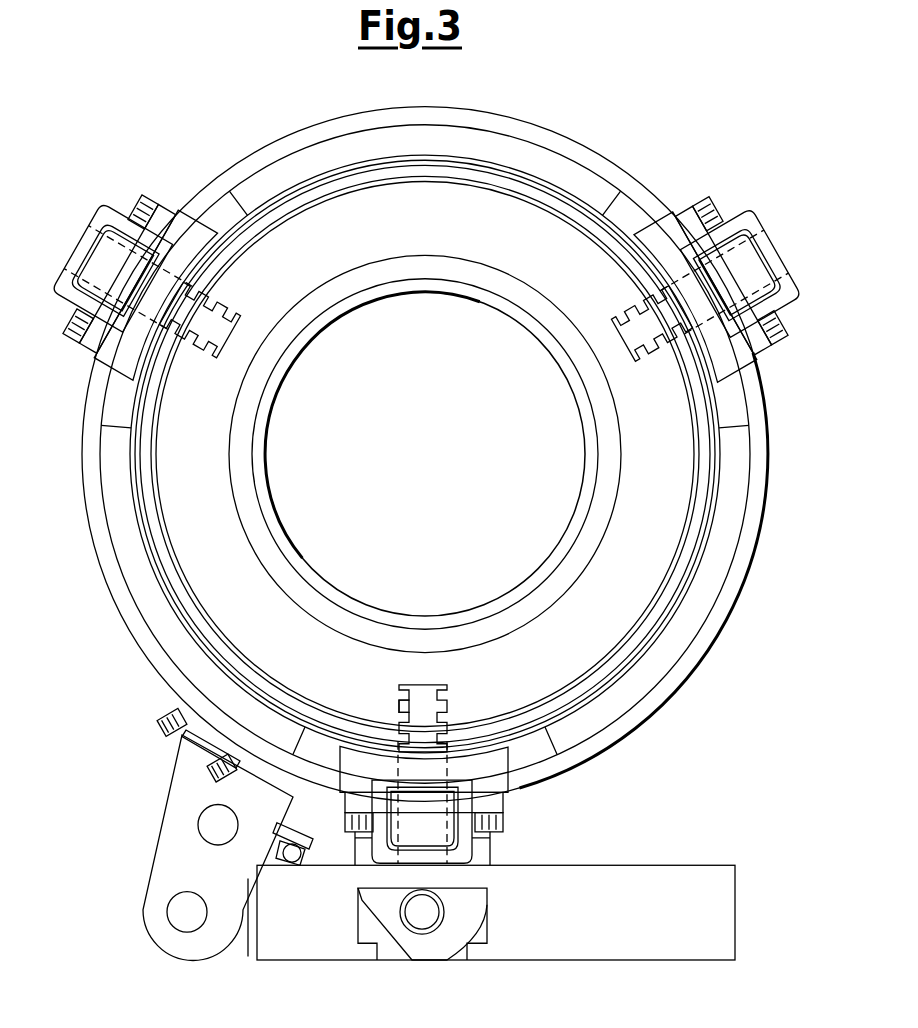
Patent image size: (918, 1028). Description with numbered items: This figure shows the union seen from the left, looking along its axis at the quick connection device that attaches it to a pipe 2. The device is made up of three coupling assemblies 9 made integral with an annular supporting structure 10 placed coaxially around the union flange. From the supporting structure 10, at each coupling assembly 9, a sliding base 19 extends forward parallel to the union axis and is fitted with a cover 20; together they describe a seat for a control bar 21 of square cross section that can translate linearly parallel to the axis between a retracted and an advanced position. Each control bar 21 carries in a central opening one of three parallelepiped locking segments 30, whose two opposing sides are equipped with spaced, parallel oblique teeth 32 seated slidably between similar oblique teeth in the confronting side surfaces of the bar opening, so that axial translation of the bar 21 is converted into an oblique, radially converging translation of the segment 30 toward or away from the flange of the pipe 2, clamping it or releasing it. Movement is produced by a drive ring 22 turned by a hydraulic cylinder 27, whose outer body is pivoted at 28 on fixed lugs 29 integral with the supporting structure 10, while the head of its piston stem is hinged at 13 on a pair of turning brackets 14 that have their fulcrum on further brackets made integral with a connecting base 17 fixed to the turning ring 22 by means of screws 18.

The pipe 2 is at (498, 585).
The coupling assembly 9 is at (510, 799).
The annular supporting structure 10 is at (735, 581).
The hinge of the piston stem head 13 is at (180, 914).
The turning bracket 14 is at (170, 855).
The connecting base 17 is at (208, 734).
The screw 18 is at (160, 715).
The sliding base 19 is at (486, 742).
The cover 20 is at (470, 799).
The control bar 21 is at (383, 839).
The drive ring 22 is at (763, 535).
The hydraulic cylinder 27 is at (570, 934).
The pivot of the cylinder body 28 is at (419, 922).
The fixed lug 29 is at (470, 898).
The locking segment 30 is at (437, 678).
The teeth 32 is at (402, 705).